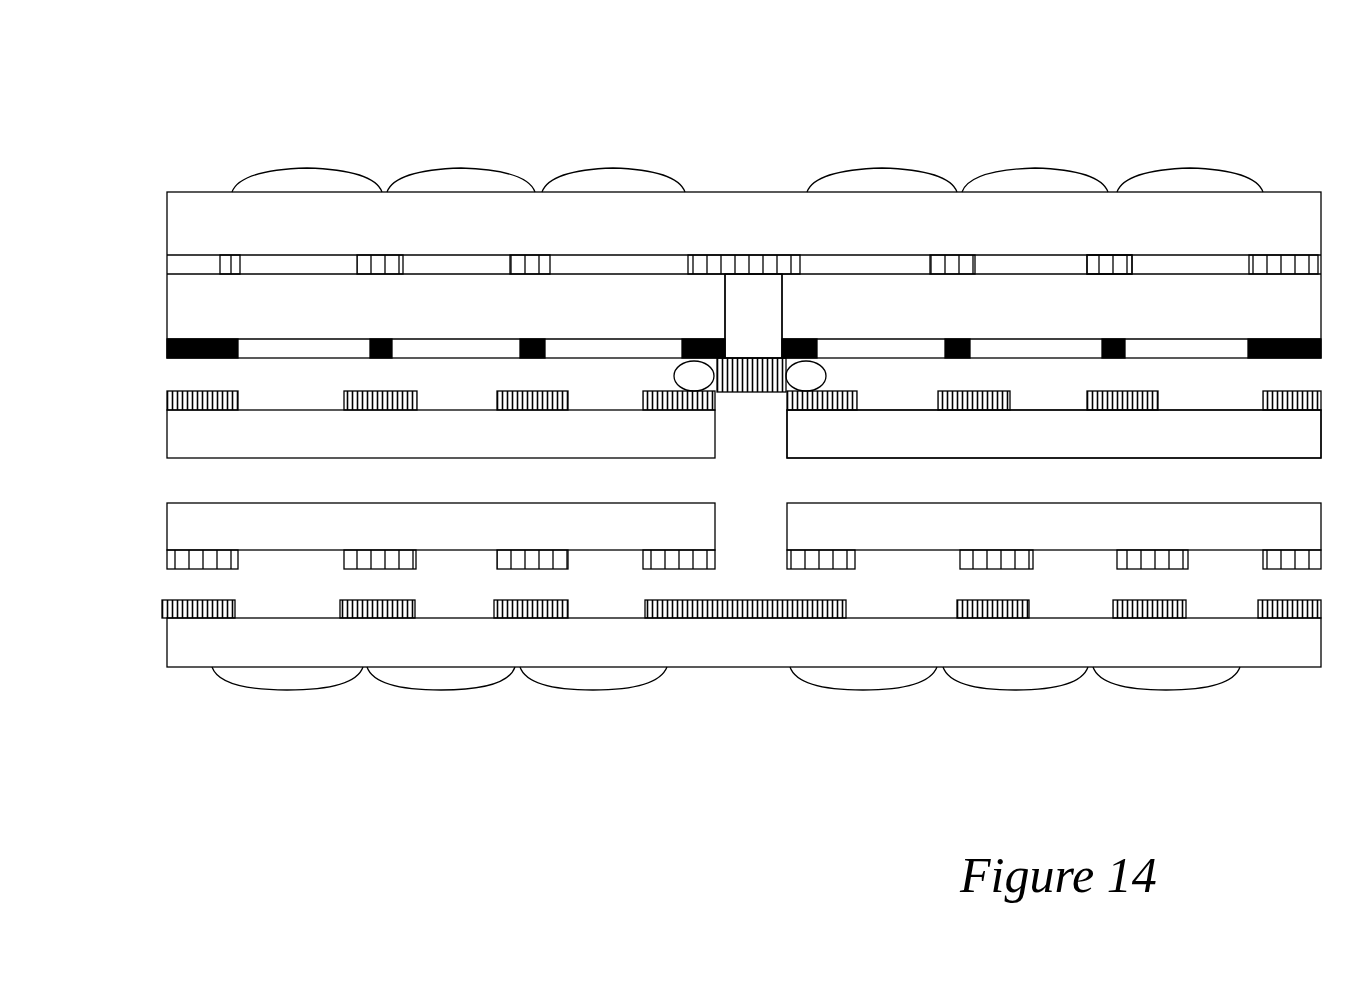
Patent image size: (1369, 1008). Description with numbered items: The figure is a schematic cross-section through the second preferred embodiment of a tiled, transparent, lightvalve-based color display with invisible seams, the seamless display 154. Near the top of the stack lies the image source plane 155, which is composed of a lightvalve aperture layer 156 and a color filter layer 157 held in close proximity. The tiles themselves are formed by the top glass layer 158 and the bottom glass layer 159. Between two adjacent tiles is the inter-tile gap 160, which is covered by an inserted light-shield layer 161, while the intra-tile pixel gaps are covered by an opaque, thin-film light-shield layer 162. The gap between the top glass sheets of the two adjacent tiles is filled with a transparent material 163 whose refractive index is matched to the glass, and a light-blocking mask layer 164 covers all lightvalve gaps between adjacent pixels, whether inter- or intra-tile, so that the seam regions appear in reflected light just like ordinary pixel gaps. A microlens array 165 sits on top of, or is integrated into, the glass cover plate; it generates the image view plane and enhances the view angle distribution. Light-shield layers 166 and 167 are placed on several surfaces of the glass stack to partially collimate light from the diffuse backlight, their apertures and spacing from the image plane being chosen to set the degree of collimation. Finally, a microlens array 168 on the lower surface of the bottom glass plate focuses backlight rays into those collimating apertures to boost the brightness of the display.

The seamless display 154 is at (159, 667).
The image source plane 155 is at (1302, 381).
The lightvalve aperture layer 156 is at (1045, 388).
The color filter layer 157 is at (1160, 265).
The top glass layer 158 is at (1223, 310).
The bottom glass layer 159 is at (1218, 435).
The inter-tile gap 160 is at (751, 435).
The inserted light-shield layer 161 is at (760, 360).
The opaque thin-film light-shield layer 162 is at (203, 392).
The transparent material 163 is at (753, 311).
The light-blocking mask layer 164 is at (380, 265).
The microlens array 165 is at (430, 182).
The light-shield layer 166 is at (823, 563).
The light-shield layer 167 is at (703, 617).
The microlens array 168 is at (1028, 690).